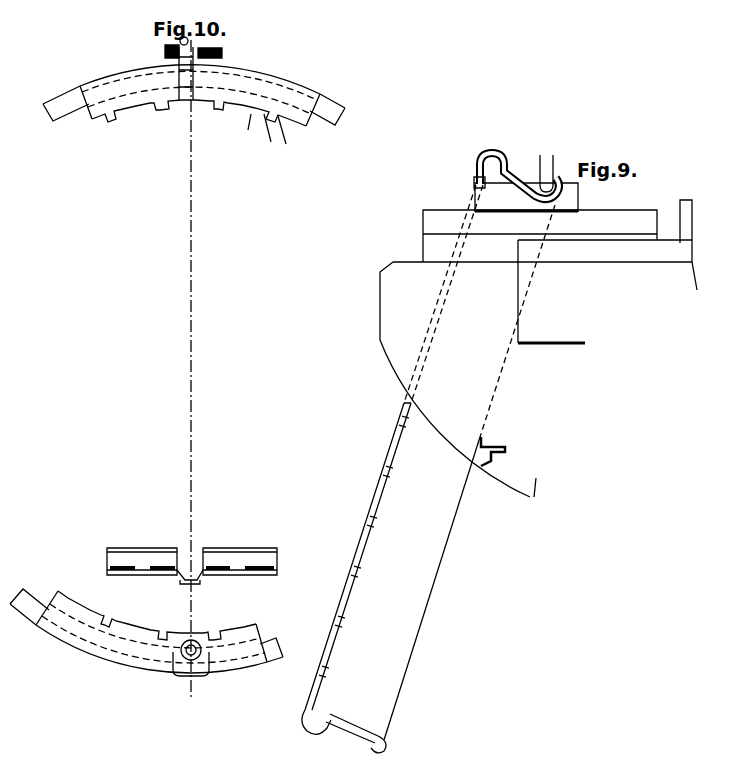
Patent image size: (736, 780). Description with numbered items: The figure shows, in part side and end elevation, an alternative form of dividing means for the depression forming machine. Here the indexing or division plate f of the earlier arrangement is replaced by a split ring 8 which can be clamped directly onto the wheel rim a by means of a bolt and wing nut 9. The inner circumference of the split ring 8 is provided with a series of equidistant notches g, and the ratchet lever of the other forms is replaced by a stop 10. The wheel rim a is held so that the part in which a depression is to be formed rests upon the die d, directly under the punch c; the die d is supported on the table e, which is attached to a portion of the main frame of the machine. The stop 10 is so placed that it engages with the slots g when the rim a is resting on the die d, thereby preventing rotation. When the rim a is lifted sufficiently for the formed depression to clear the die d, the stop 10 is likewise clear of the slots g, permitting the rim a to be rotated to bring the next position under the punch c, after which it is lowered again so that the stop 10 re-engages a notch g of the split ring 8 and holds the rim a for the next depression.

In FIG. 10, the split ring 8 is at (134, 558).
In FIG. 10, the bolt and wing nut 9 is at (165, 51).
In FIG. 10, the stop 10 is at (267, 137).
In FIG. 9, the stop 10 is at (474, 179).
In FIG. 9, the wheel rim a is at (437, 563).
In FIG. 9, the punch c is at (553, 163).
In FIG. 9, the die d is at (576, 197).
In FIG. 9, the table e is at (617, 226).
In FIG. 9, the division plate f is at (366, 541).
In FIG. 9, the notches g is at (386, 473).